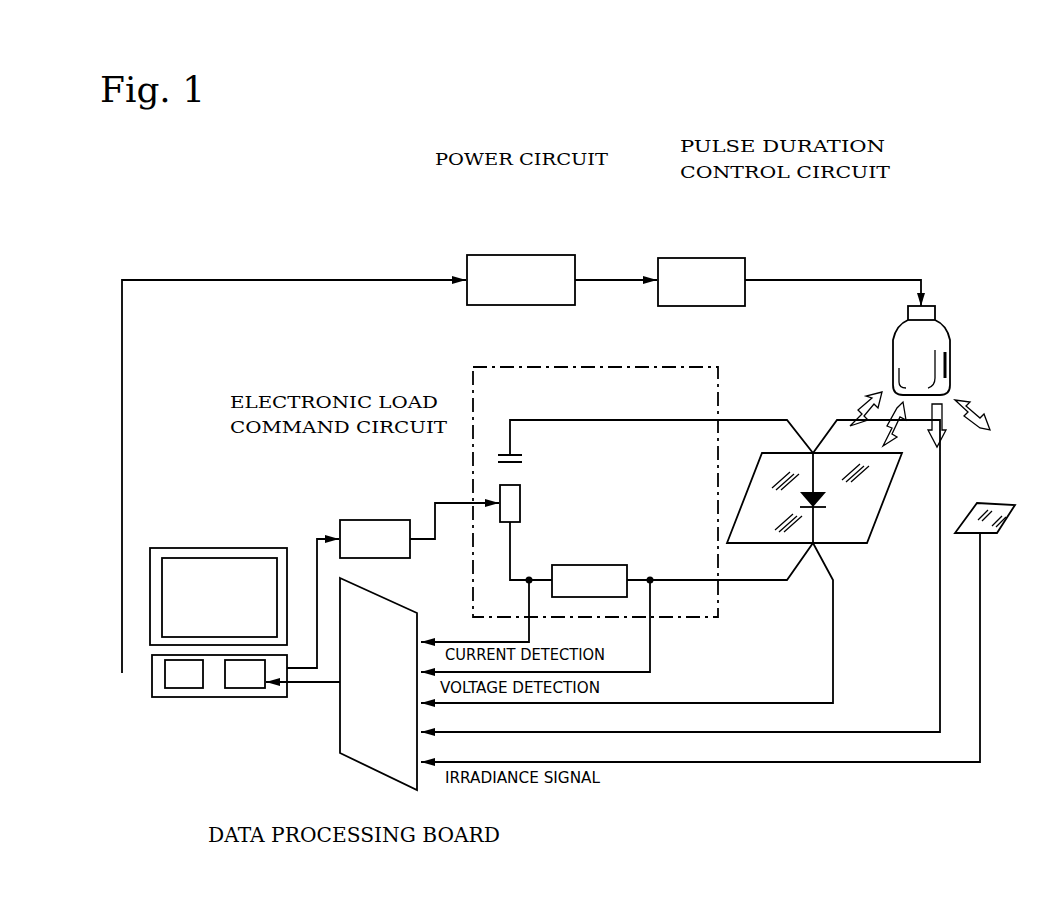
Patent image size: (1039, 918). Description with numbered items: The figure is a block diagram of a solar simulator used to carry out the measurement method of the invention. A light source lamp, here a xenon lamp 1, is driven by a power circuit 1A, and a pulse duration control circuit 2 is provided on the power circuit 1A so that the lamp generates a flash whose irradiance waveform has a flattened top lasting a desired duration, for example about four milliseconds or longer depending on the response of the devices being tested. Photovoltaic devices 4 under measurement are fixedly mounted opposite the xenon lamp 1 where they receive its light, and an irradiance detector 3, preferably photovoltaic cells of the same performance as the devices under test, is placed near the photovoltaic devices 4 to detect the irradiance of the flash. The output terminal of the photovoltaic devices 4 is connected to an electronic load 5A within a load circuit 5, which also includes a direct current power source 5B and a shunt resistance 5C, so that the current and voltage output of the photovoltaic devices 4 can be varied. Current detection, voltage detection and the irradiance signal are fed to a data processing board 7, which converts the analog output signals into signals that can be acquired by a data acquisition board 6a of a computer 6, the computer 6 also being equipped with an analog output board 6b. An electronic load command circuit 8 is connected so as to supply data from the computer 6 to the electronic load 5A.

The xenon lamp 1 is at (950, 362).
The power circuit 1A is at (548, 254).
The pulse duration control circuit 2 is at (700, 258).
The irradiance detector 3 is at (990, 503).
The photovoltaic devices 4 is at (872, 527).
The load circuit 5 is at (653, 367).
The electronic load 5A is at (521, 510).
The direct current power source 5B is at (522, 460).
The shunt resistance 5C is at (597, 565).
The computer 6 is at (243, 548).
The data acquisition board 6a is at (255, 697).
The analog output board 6b is at (190, 697).
The data processing board 7 is at (346, 758).
The electronic load command circuit 8 is at (375, 520).